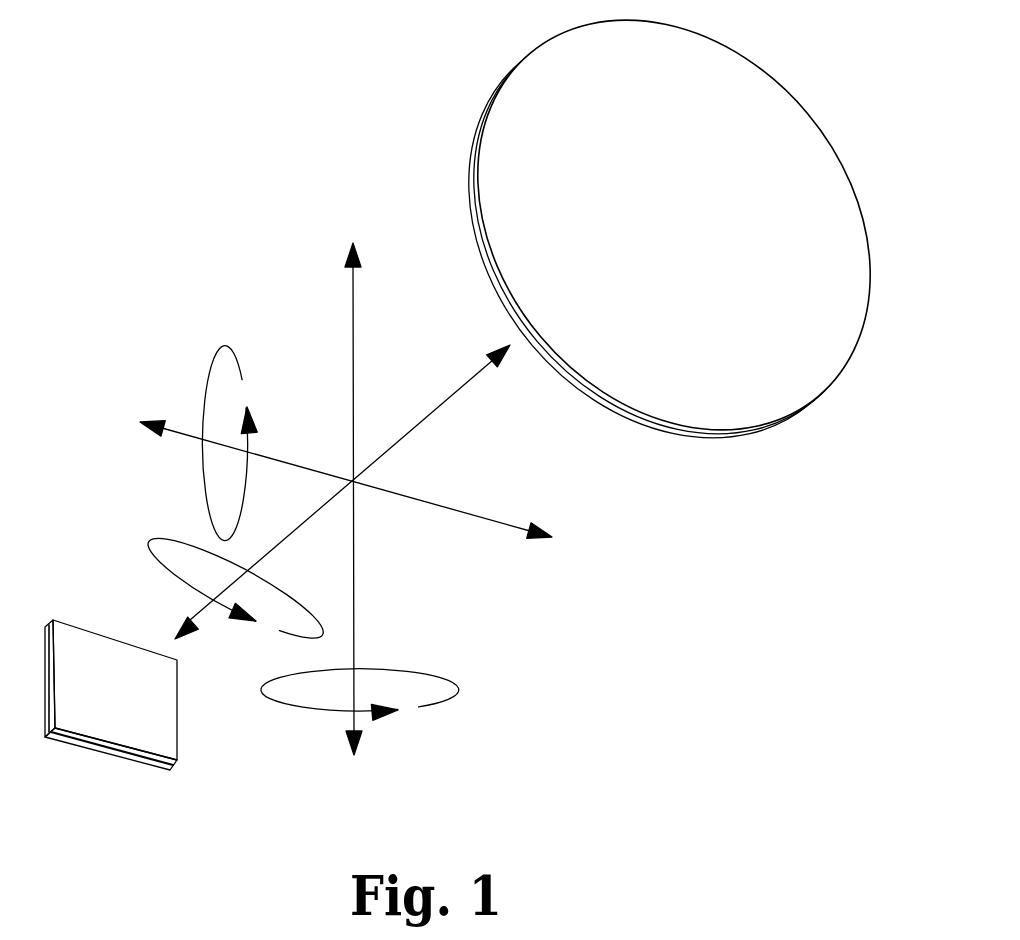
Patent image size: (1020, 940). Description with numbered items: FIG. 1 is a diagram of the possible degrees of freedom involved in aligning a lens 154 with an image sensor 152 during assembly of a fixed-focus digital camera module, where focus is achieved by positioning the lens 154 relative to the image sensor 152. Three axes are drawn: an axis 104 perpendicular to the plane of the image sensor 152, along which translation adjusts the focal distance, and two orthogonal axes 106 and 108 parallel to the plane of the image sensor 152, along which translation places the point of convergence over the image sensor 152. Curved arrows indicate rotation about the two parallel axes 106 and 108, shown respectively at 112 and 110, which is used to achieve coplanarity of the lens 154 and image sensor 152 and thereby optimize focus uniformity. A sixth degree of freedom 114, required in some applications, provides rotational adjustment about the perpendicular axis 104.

The axis perpendicular to the plane of the image sensor 104 is at (435, 412).
The orthogonal axis parallel to the plane of the image sensor 106 is at (423, 503).
The orthogonal axis parallel to the plane of the image sensor 108 is at (355, 352).
The rotation about axis 108 110 is at (422, 710).
The rotation about axis 106 112 is at (252, 443).
The sixth degree of freedom 114 is at (160, 565).
The image sensor 152 is at (158, 770).
The lens 154 is at (862, 332).